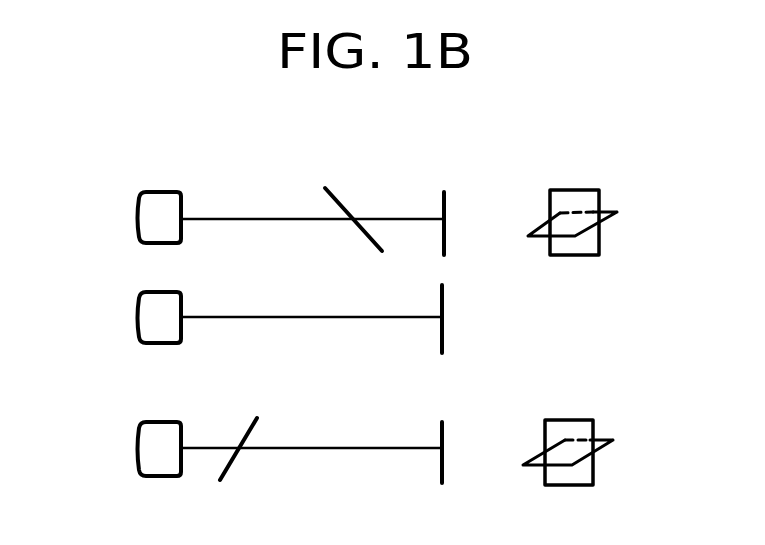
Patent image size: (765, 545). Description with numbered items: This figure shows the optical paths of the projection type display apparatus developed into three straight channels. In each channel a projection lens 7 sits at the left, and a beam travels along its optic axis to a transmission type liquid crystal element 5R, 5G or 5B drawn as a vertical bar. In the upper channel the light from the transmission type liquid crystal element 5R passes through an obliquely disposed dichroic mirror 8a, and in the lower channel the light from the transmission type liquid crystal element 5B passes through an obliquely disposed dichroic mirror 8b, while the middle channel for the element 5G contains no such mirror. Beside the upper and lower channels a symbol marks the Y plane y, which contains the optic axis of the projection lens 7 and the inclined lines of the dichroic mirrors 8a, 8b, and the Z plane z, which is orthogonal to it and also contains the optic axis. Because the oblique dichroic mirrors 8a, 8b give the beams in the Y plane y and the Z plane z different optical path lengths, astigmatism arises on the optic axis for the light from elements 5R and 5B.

The projection lens 7 is at (152, 237).
The dichroic mirror 8a is at (338, 199).
The dichroic mirror 8b is at (260, 428).
The transmission type liquid crystal element 5R is at (448, 205).
The transmission type liquid crystal element 5G is at (446, 303).
The transmission type liquid crystal element 5B is at (446, 432).
The Y plane y is at (583, 197).
The Z plane z is at (610, 214).